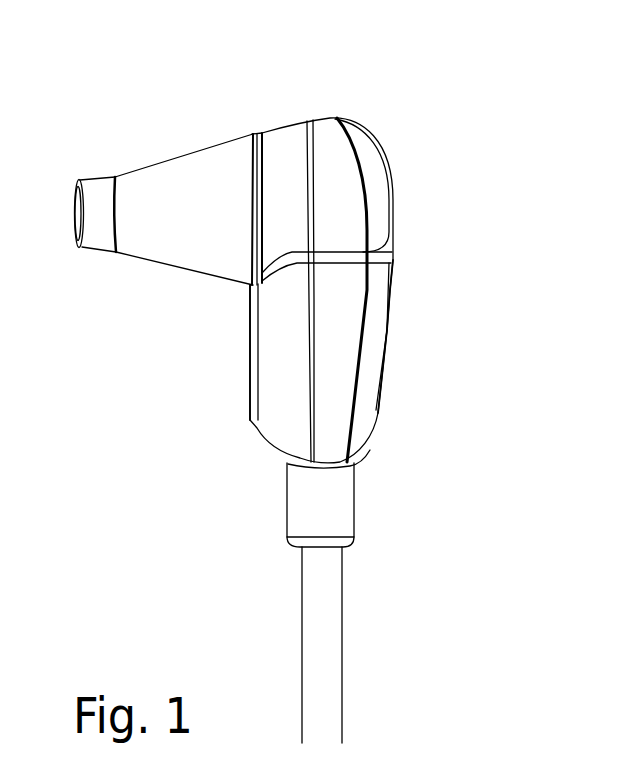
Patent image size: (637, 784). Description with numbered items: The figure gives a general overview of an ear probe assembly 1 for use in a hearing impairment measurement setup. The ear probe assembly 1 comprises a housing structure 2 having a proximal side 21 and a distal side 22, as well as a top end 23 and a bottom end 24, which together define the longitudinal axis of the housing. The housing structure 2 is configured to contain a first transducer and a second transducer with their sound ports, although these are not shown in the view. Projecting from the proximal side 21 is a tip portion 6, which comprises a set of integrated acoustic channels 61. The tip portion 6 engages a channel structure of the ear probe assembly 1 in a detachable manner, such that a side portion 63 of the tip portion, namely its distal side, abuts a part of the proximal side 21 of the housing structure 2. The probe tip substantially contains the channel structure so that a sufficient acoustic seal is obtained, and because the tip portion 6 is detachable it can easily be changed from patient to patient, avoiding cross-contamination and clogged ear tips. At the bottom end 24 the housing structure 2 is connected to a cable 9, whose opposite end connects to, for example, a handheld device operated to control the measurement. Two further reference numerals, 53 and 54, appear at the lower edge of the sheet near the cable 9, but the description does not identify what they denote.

The ear probe assembly 1 is at (418, 112).
The housing structure 2 is at (382, 195).
The tip portion 6 is at (136, 170).
The integrated acoustic channels 61 is at (75, 195).
The side portion 63 is at (255, 133).
The proximal side 21 is at (250, 342).
The distal side 22 is at (388, 325).
The top end 23 is at (313, 120).
The bottom end 24 is at (350, 465).
The cable 9 is at (340, 678).
The control unit 53 is at (608, 783).
The control unit connector 54 is at (575, 783).